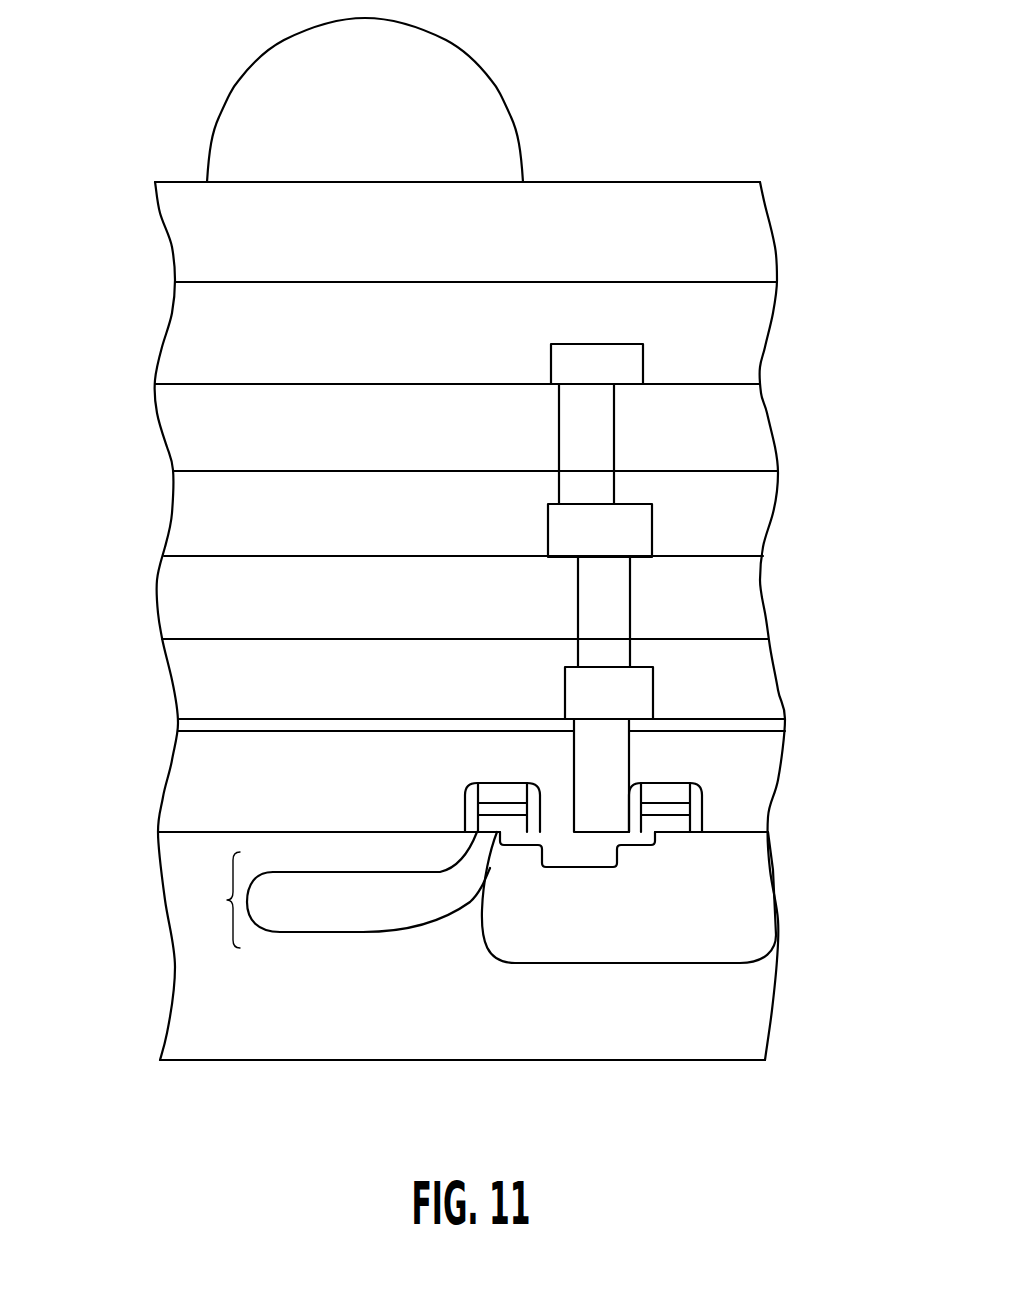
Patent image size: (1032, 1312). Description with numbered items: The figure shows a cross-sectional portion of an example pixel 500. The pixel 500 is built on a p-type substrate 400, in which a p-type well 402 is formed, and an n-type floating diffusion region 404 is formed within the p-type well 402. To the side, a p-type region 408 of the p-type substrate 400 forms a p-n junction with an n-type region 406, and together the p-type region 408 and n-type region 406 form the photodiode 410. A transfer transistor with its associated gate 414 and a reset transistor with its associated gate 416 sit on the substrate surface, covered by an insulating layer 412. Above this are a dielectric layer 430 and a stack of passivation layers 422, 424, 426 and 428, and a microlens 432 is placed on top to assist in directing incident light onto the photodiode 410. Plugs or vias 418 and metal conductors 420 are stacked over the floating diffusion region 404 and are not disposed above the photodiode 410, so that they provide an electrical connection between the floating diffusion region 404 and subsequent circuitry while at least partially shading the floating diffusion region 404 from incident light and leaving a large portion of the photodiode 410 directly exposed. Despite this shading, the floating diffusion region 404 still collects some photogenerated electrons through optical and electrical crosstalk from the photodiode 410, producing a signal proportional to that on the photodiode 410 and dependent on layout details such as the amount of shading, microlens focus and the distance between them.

The p-type substrate 400 is at (659, 1037).
The p-type well 402 is at (619, 943).
The n-type floating diffusion region 404 is at (541, 870).
The n-type region 406 is at (294, 917).
The p-type region 408 is at (311, 867).
The photodiode 410 is at (212, 900).
The insulating layer 412 is at (185, 787).
The transfer transistor gate 414 is at (503, 783).
The reset transistor gate 416 is at (678, 782).
The plugs 418 is at (611, 428).
The metal conductors 420 is at (636, 368).
The passivation layer 422 is at (187, 673).
The passivation layer 424 is at (180, 597).
The passivation layer 426 is at (190, 517).
The passivation layer 428 is at (180, 427).
The dielectric layer 430 is at (785, 725).
The microlens 432 is at (475, 110).
The pixel 500 is at (783, 1000).